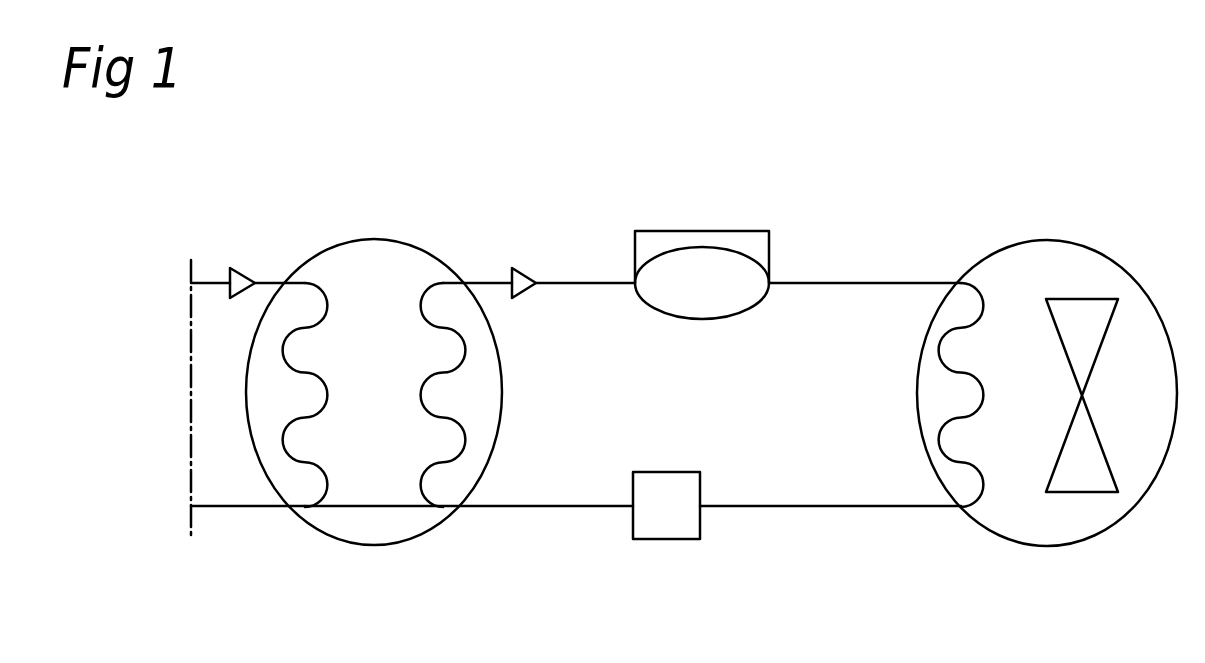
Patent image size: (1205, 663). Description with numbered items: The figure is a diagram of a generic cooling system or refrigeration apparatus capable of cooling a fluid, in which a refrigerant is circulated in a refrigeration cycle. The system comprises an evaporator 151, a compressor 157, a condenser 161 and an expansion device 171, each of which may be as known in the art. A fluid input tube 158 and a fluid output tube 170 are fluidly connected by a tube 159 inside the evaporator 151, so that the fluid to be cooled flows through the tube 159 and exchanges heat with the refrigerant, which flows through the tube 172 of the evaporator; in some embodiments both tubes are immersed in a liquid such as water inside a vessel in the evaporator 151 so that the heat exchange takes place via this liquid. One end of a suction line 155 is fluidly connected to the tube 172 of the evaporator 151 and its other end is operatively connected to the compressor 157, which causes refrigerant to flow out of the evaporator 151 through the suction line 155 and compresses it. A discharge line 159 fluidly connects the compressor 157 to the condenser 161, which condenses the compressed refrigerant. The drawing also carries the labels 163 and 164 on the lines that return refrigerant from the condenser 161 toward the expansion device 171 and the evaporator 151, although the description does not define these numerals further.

The evaporator 151 is at (375, 510).
The suction line 155 is at (487, 281).
The compressor 157 is at (700, 231).
The fluid input tube 158 is at (212, 281).
The tube 159 is at (320, 407).
The condenser 161 is at (1042, 513).
The return conduit 163 is at (860, 507).
The return conduit 164 is at (553, 509).
The fluid output tube 170 is at (240, 509).
The expansion device 171 is at (665, 540).
The tube 172 is at (465, 450).